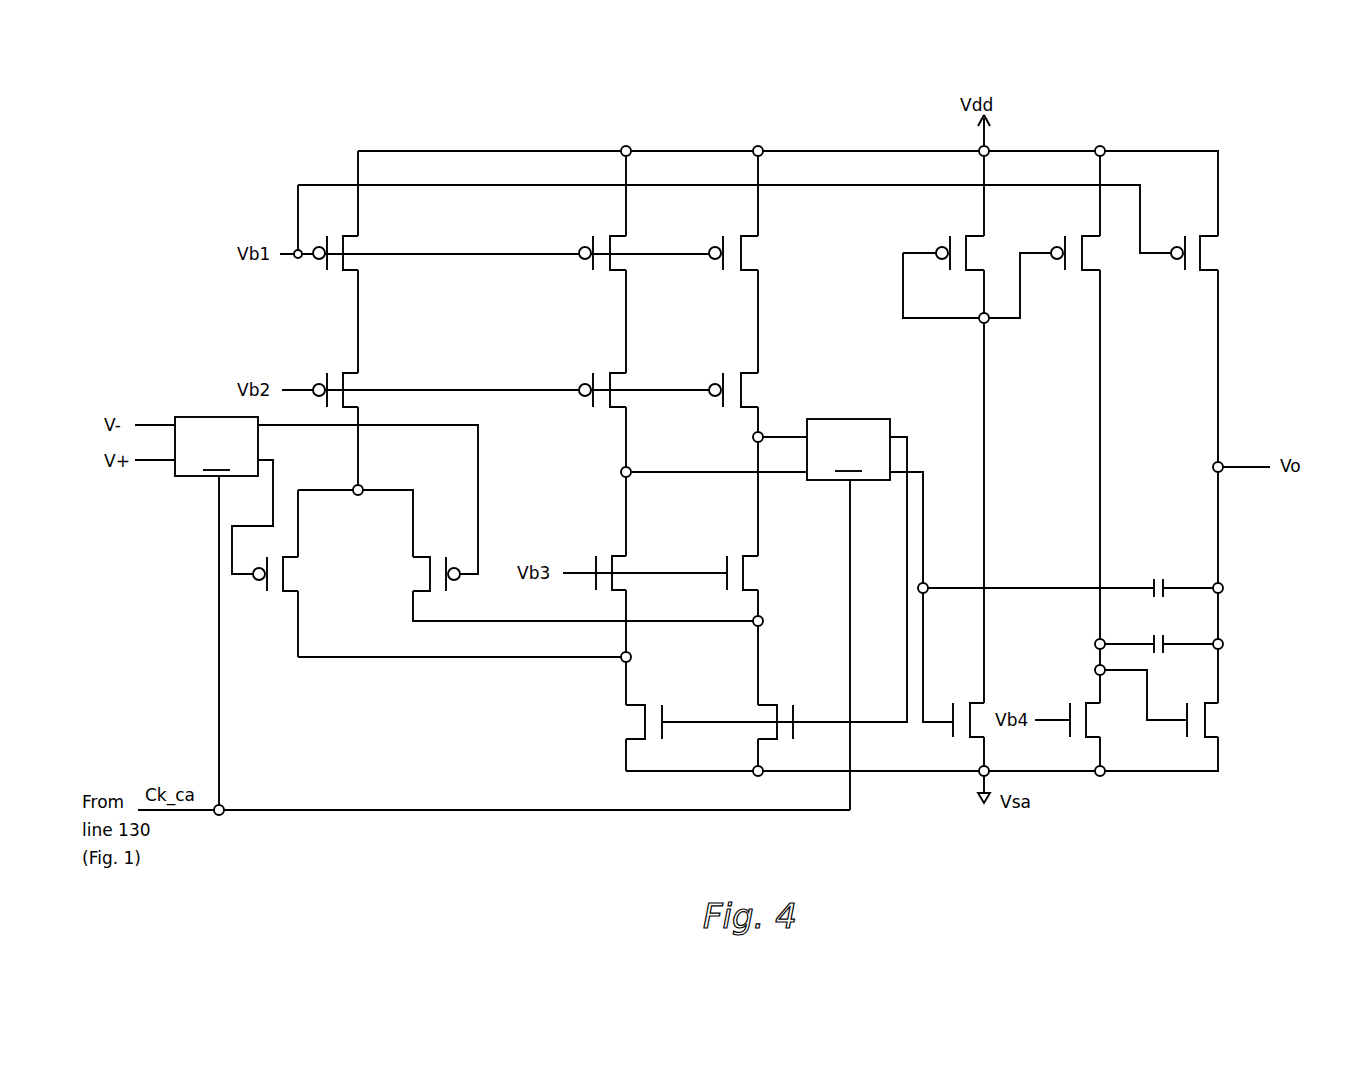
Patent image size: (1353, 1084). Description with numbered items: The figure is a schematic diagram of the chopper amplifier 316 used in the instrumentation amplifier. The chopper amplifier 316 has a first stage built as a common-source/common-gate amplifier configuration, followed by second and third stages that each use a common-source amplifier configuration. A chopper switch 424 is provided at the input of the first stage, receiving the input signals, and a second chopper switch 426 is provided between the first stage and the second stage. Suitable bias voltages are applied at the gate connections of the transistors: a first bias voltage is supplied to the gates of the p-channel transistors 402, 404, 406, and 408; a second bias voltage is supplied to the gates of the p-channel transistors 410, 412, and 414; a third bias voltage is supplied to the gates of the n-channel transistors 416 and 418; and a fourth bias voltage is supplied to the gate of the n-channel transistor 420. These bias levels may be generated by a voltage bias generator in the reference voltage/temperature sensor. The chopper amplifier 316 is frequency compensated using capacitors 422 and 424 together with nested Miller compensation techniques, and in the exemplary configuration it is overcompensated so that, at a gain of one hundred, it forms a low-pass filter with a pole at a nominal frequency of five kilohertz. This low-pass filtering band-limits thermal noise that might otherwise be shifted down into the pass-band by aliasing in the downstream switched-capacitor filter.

The chopper amplifier 316 is at (1292, 186).
The p-channel transistor 402 is at (356, 249).
The p-channel transistor 404 is at (624, 249).
The p-channel transistor 406 is at (750, 253).
The p-channel transistor 408 is at (1209, 253).
The p-channel transistor 410 is at (356, 385).
The p-channel transistor 412 is at (624, 385).
The p-channel transistor 414 is at (750, 390).
The n-channel transistor 416 is at (633, 567).
The n-channel transistor 418 is at (756, 573).
The n-channel transistor 420 is at (1097, 720).
The capacitor 422 is at (1070, 576).
The chopper switch 424 is at (696, 535).
The chopper switch 426 is at (789, 614).